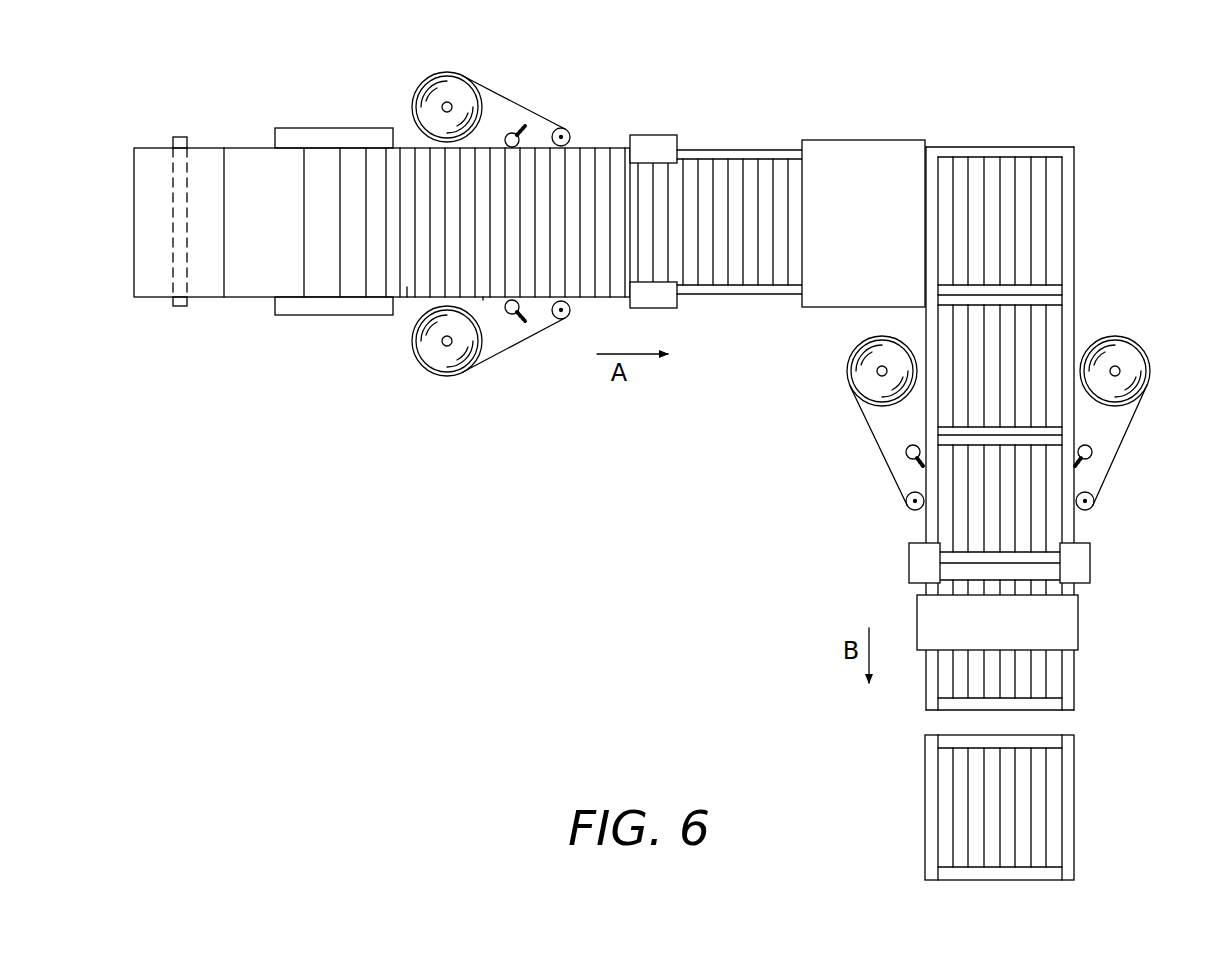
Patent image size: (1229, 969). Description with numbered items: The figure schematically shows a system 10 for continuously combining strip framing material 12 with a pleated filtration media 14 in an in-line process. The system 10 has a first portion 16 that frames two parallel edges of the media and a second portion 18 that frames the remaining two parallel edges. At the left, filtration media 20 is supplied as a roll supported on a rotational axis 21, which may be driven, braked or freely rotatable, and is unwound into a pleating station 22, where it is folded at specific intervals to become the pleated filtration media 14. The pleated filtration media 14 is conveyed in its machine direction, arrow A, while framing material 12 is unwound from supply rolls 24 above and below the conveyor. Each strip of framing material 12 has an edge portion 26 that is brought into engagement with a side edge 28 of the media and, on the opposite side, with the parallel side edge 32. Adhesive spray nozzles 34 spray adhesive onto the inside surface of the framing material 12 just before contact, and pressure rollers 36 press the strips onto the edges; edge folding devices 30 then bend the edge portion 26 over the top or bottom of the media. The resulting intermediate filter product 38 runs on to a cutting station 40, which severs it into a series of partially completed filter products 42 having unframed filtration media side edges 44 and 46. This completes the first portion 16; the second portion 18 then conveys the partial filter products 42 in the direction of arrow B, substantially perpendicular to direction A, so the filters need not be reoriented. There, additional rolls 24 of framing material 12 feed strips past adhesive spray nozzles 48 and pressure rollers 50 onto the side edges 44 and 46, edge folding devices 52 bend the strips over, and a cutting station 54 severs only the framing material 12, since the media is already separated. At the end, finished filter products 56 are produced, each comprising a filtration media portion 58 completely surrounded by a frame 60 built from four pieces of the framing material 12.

The system 10 is at (718, 384).
The framing material 12 is at (504, 106).
The pleated filtration media 14 is at (407, 287).
The first portion 16 is at (677, 86).
The second portion 18 is at (1150, 546).
The filtration media 20 is at (210, 150).
The rotational axis 21 is at (180, 136).
The pleating station 22 is at (293, 315).
The rolls 24 is at (447, 80).
The edge portion 26 is at (757, 150).
The side edge 28 is at (414, 147).
The edge folding device 30 is at (665, 142).
The parallel side edge 32 is at (483, 298).
The adhesive spray nozzles 34 is at (505, 138).
The pressure rollers 36 is at (562, 127).
The intermediate filter product 38 is at (788, 186).
The cutting station 40 is at (907, 150).
The partially completed filter products 42 is at (1068, 222).
The filtration media side edge 44 is at (1075, 255).
The filtration media side edge 46 is at (926, 322).
The adhesive spray nozzles 48 is at (913, 445).
The pressure rollers 50 is at (906, 500).
The edge folding devices 52 is at (912, 566).
The cutting station 54 is at (1080, 628).
The filter products 56 is at (1070, 817).
The filtration media portion 58 is at (985, 830).
The frame 60 is at (930, 790).